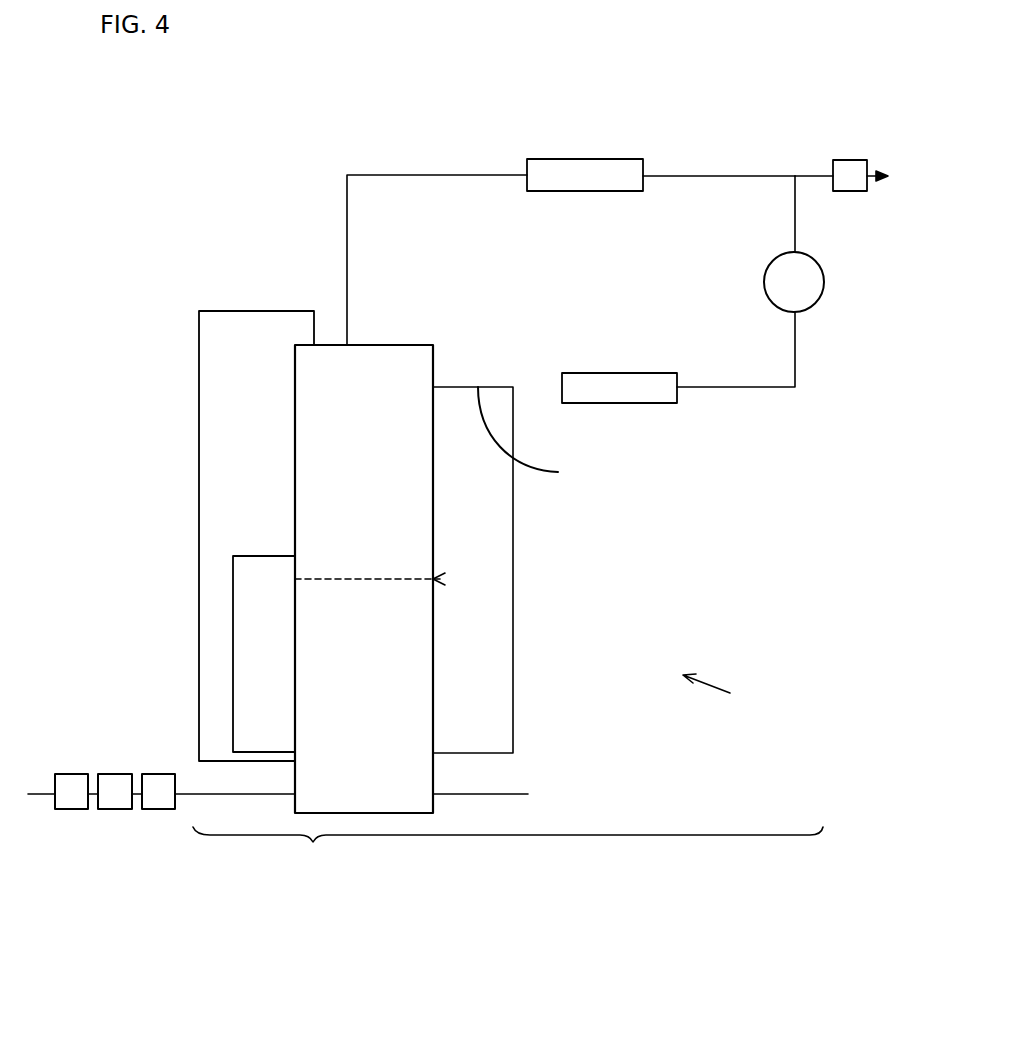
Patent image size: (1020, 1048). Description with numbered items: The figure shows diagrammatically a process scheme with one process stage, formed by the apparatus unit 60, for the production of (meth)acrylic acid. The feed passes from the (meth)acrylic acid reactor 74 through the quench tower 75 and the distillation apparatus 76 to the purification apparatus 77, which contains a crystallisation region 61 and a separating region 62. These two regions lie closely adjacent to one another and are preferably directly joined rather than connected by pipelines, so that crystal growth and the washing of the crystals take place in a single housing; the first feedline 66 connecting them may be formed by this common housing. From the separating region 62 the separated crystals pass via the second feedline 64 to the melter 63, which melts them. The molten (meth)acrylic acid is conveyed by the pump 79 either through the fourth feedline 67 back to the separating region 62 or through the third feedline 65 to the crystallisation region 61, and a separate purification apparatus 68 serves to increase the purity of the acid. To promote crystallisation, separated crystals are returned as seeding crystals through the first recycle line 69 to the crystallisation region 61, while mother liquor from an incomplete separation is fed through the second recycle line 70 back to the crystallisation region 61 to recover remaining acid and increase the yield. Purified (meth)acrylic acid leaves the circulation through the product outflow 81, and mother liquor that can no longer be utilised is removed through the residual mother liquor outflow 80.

The apparatus unit 60 is at (729, 695).
The crystallisation region 61 is at (313, 608).
The separating region 62 is at (312, 483).
The melter 63 is at (570, 170).
The second feedline 64 is at (378, 173).
The third feedline 65 is at (513, 608).
The first feedline 66 is at (446, 578).
The fourth feedline 67 is at (539, 438).
The separate purification apparatus 68 is at (856, 192).
The first recycle line 69 is at (199, 379).
The second recycle line 70 is at (233, 682).
The (meth)acrylic acid reactor 74 is at (72, 810).
The quench tower 75 is at (115, 810).
The distillation apparatus 76 is at (158, 810).
The purification apparatus 77 is at (508, 854).
The pump 79 is at (810, 285).
The residual mother liquor outflow 80 is at (512, 793).
The product outflow 81 is at (818, 170).